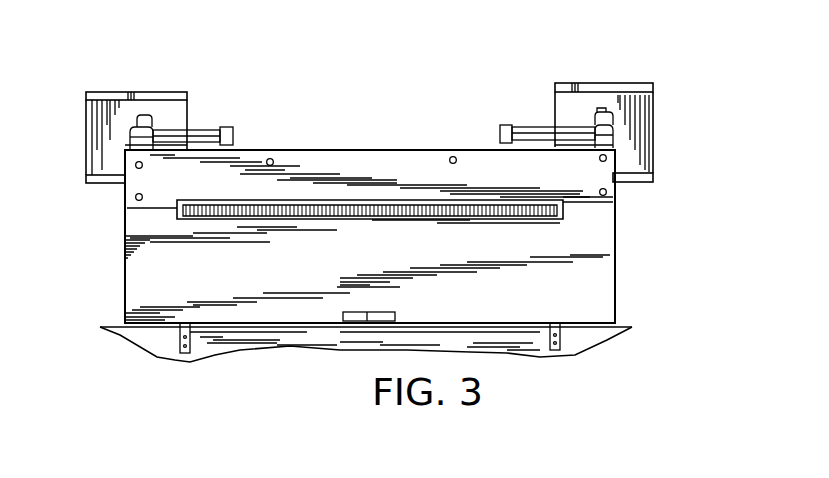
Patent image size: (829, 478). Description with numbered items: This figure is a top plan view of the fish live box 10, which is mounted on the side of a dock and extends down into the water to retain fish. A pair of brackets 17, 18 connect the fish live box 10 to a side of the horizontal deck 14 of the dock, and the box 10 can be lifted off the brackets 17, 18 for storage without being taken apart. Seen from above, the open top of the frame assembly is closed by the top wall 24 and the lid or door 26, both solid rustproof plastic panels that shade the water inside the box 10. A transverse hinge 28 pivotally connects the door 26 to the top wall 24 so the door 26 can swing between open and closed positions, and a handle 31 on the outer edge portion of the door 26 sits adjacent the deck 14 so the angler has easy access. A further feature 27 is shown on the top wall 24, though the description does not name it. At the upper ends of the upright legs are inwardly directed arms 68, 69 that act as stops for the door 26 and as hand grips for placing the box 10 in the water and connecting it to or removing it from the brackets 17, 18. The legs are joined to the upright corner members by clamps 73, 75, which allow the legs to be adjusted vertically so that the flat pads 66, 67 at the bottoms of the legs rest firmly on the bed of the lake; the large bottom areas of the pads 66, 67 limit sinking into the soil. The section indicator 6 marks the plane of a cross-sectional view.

The fish live box 10 is at (677, 97).
The deck 14 is at (596, 342).
The bracket 17 is at (542, 351).
The bracket 18 is at (191, 353).
The top wall 24 is at (295, 173).
The door 26 is at (597, 279).
The hole 27 is at (452, 156).
The transverse hinge 28 is at (345, 204).
The handle 31 is at (358, 313).
The pad 66 is at (94, 120).
The pad 67 is at (645, 129).
The arm 68 is at (199, 129).
The arm 69 is at (527, 127).
The clamp 73 is at (607, 111).
The clamp 75 is at (140, 116).
The section line 6- 6 is at (165, 317).